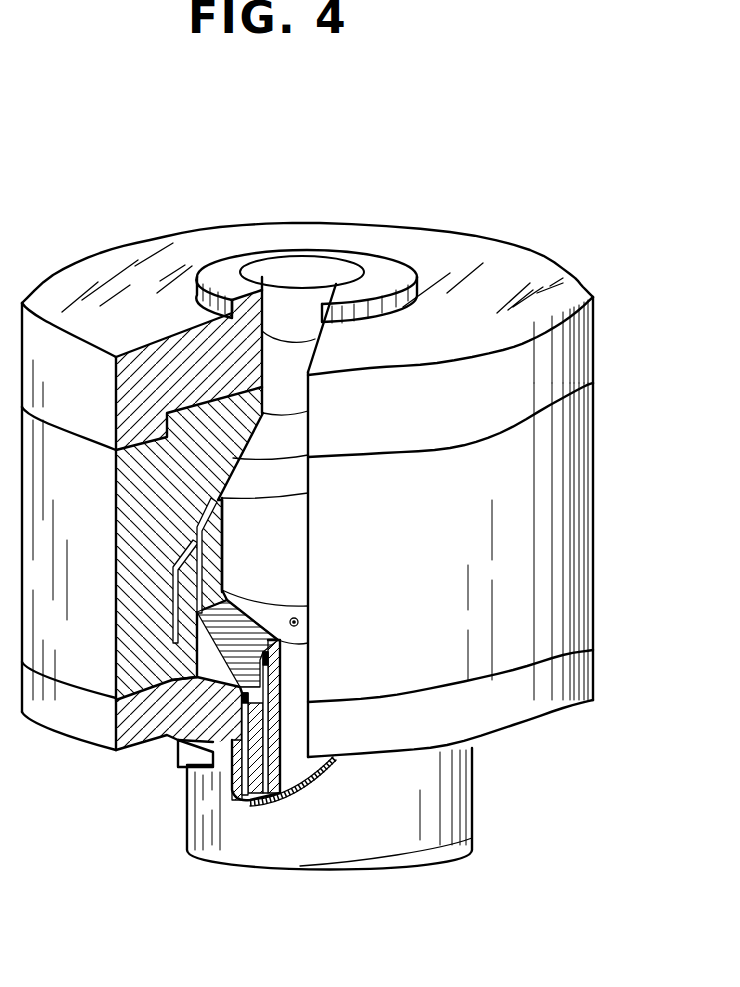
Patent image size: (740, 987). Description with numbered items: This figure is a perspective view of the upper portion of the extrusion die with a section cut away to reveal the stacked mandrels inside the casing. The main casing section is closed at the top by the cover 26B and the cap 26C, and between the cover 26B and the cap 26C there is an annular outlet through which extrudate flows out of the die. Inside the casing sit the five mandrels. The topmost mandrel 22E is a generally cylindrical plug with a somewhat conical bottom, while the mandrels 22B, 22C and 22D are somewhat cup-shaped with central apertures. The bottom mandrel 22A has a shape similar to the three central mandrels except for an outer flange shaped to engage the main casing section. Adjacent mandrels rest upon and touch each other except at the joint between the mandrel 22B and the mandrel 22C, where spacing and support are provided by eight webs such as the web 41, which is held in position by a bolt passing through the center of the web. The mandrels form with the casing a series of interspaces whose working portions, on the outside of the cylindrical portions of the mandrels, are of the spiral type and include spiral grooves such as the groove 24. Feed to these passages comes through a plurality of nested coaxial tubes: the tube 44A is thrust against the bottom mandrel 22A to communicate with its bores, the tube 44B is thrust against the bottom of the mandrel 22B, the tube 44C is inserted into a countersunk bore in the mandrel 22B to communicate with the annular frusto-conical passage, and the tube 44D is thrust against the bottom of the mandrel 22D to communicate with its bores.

The mandrel 22A is at (95, 735).
The mandrel 22B is at (213, 528).
The mandrel 22C is at (287, 484).
The mandrel 22D is at (290, 440).
The mandrel 22E is at (277, 347).
The spiral groove 24 is at (178, 615).
The cover 26B is at (497, 295).
The cap 26C is at (333, 270).
The web 41 is at (298, 622).
The tube 44A is at (210, 820).
The tube 44B is at (248, 805).
The tube 44C is at (282, 772).
The tube 44D is at (297, 738).